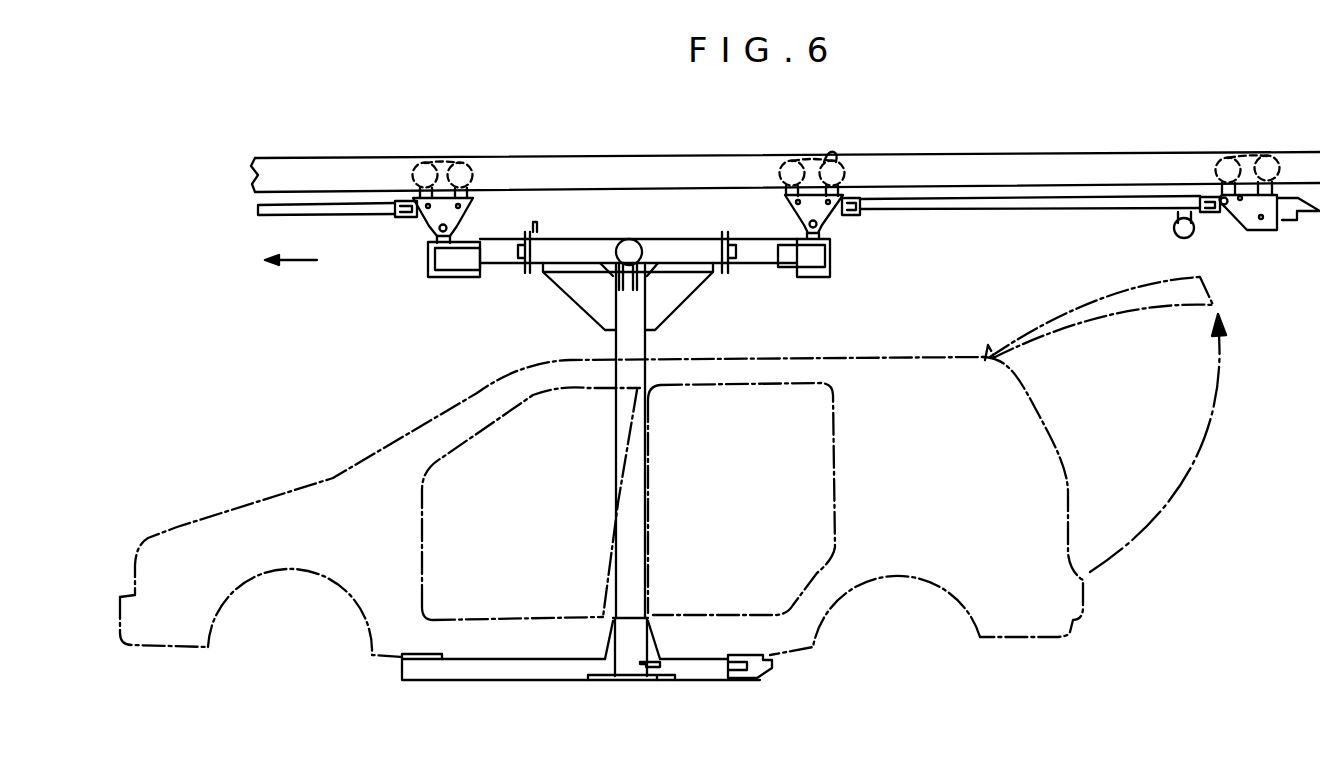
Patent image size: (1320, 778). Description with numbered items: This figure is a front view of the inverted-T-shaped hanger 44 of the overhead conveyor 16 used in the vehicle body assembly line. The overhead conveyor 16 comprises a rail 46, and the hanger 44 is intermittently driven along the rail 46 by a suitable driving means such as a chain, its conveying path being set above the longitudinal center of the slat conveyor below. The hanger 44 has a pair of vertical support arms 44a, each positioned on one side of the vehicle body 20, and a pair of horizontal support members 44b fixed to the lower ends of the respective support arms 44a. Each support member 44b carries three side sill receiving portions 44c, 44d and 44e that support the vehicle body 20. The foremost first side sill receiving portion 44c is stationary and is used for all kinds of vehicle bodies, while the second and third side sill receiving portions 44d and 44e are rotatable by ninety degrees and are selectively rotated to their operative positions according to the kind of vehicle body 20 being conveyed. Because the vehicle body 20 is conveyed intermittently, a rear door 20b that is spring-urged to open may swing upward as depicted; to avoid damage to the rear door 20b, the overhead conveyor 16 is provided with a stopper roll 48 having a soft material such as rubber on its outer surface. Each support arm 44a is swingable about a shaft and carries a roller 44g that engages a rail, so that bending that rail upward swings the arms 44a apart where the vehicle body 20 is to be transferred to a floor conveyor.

The overhead conveyor 16 is at (1188, 150).
The rail 46 is at (1070, 152).
The stopper roll 48 is at (1195, 228).
The inverted-T-shaped hanger 44 is at (599, 468).
The vertical support arm 44a is at (613, 437).
The horizontal support member 44b is at (503, 660).
The first side sill receiving portion 44c is at (415, 655).
The second side sill receiving portion 44d is at (658, 668).
The third side sill receiving portion 44e is at (764, 654).
The roller 44g is at (640, 242).
The vehicle body 20 is at (418, 427).
The rear door 20b is at (1067, 297).